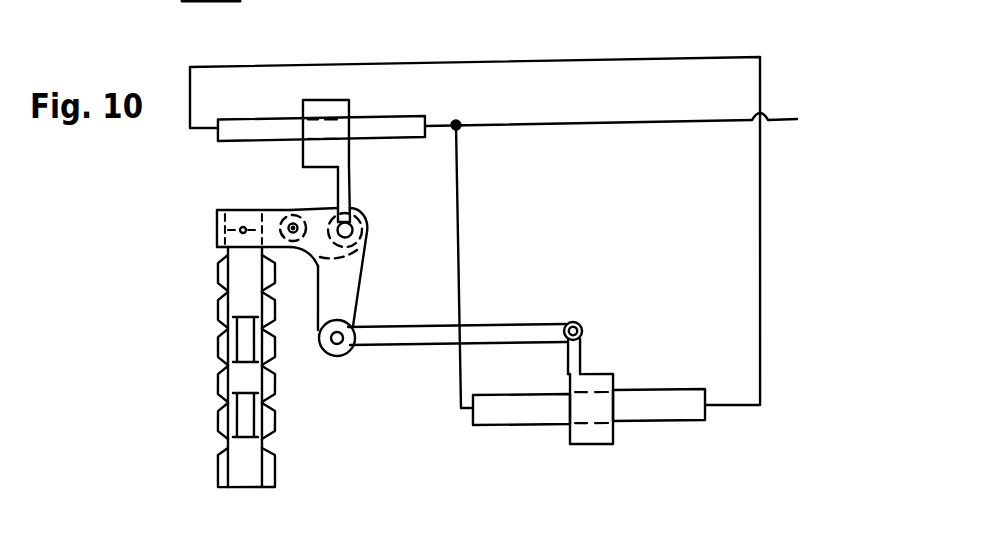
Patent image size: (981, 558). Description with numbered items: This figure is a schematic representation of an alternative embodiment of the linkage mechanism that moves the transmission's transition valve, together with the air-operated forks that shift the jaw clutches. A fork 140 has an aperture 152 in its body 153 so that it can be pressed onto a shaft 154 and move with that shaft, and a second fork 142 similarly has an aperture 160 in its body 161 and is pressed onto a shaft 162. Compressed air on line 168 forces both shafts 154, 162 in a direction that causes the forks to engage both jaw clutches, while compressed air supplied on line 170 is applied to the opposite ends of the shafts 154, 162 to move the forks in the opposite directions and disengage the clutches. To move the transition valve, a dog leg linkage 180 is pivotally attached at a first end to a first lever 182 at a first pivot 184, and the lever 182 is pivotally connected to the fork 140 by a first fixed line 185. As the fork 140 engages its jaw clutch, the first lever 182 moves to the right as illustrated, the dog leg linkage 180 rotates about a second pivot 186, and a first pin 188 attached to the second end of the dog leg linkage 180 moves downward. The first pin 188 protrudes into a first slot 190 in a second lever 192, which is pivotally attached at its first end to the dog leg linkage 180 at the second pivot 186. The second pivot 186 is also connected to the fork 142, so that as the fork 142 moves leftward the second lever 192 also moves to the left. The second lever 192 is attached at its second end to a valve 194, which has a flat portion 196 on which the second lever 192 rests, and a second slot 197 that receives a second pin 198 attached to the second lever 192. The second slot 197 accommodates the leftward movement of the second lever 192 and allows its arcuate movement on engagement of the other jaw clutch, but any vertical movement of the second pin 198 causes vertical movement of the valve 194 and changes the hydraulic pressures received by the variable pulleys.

The line 170 is at (501, 63).
The line 168 is at (590, 123).
The shaft 162 is at (228, 138).
The fork 142 is at (362, 91).
The aperture 160 is at (317, 128).
The body 161 is at (342, 185).
The second pivot 186 is at (364, 214).
The first pin 188 is at (287, 207).
The dog leg linkage 180 is at (340, 278).
The first slot 190 is at (308, 244).
The first pivot 184 is at (333, 345).
The first lever 182 is at (406, 345).
The first fixed line 185 is at (568, 355).
The fork 140 is at (622, 369).
The body 153 is at (578, 437).
The shaft 154 is at (507, 413).
The aperture 152 is at (610, 428).
The second lever 192 is at (218, 238).
The second pin 198 is at (216, 202).
The second slot 197 is at (246, 219).
The flat portion 196 is at (225, 251).
The valve 194 is at (218, 371).